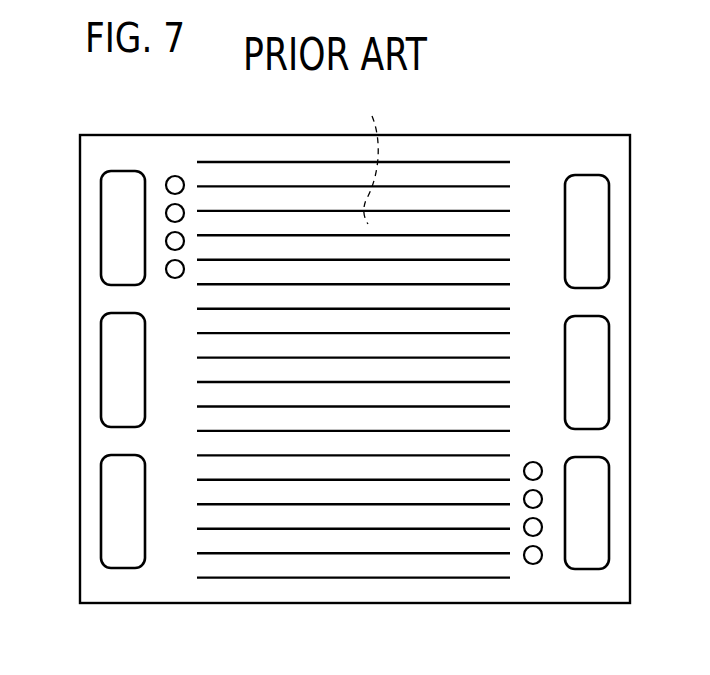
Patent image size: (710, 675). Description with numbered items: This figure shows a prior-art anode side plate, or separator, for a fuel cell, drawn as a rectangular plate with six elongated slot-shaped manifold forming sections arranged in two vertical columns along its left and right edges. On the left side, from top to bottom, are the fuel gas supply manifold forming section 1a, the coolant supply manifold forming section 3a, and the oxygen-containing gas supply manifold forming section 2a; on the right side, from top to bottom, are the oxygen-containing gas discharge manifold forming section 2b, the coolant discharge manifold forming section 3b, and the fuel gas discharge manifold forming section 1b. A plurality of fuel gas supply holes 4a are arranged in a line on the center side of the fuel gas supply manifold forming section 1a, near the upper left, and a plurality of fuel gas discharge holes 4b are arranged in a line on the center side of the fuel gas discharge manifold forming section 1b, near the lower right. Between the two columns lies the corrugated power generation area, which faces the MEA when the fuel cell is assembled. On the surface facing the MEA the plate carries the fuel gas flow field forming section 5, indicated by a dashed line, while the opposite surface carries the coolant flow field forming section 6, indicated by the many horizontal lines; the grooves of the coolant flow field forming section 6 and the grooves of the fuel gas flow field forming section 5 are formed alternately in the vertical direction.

The fuel gas supply manifold forming section 1a is at (103, 253).
The fuel gas discharge manifold forming section 1b is at (606, 513).
The oxygen-containing gas supply manifold forming section 2a is at (103, 510).
The oxygen-containing gas discharge manifold forming section 2b is at (606, 256).
The coolant supply manifold forming section 3a is at (103, 366).
The coolant discharge manifold forming section 3b is at (606, 368).
The fuel gas supply holes 4a is at (174, 176).
The fuel gas discharge holes 4b is at (538, 563).
The fuel gas flow field forming section 5 is at (370, 157).
The coolant flow field forming section 6 is at (274, 197).